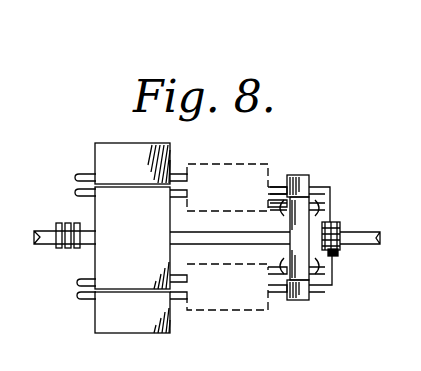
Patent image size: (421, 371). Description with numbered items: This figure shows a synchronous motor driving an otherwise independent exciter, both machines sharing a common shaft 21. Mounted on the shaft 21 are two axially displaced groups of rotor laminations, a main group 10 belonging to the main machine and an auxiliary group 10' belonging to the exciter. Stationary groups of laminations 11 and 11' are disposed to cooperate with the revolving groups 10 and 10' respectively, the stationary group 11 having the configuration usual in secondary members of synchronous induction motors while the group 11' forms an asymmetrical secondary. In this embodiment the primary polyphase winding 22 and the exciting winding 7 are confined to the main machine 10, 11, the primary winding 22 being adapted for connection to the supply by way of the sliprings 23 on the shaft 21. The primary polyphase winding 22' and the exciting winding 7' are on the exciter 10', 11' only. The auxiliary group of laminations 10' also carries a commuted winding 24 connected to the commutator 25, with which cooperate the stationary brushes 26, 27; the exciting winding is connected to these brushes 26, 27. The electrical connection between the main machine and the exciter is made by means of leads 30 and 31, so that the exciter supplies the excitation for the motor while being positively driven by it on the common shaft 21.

The exciting winding 7 is at (71, 177).
The exciting winding of the exciter 7' is at (307, 227).
The main group of laminations 10 is at (115, 238).
The auxiliary group of laminations 10' is at (230, 247).
The stationary group of laminations 11 is at (132, 236).
The stationary group of laminations of the exciter 11' is at (311, 236).
The shaft 21 is at (40, 246).
The primary three-phase winding 22 is at (65, 297).
The primary polyphase winding of the exciter 22' is at (259, 285).
The sliprings 23 is at (69, 222).
The commuted winding 24 is at (282, 204).
The commutator 25 is at (343, 233).
The brush 26 is at (333, 224).
The brush 27 is at (335, 256).
The leads 30 is at (222, 210).
The leads 31 is at (222, 163).